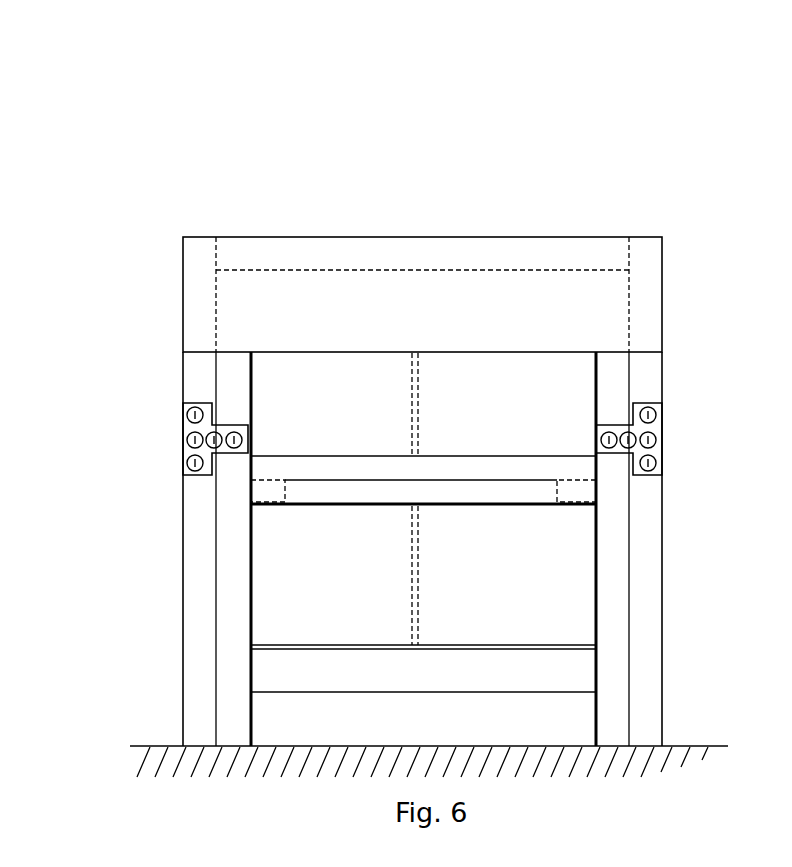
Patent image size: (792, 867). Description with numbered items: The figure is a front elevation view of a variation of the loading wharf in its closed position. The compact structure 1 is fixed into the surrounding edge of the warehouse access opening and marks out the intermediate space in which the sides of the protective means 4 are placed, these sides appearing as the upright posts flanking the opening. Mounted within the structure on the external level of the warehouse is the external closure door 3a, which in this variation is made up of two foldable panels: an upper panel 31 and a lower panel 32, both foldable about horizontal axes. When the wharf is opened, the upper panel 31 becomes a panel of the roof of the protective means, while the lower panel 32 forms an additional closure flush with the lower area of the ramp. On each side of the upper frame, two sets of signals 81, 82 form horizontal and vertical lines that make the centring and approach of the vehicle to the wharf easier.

The compact structure 1 is at (340, 236).
The external closure door 3a is at (302, 622).
The sides of the protective means 4 is at (283, 580).
The upper panel 31 is at (503, 415).
The lower panel 32 is at (405, 562).
The set of signals 81 is at (228, 432).
The set of signals 82 is at (185, 423).